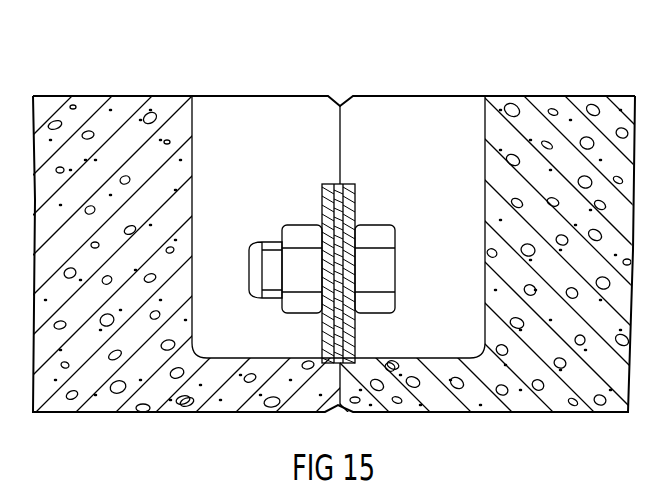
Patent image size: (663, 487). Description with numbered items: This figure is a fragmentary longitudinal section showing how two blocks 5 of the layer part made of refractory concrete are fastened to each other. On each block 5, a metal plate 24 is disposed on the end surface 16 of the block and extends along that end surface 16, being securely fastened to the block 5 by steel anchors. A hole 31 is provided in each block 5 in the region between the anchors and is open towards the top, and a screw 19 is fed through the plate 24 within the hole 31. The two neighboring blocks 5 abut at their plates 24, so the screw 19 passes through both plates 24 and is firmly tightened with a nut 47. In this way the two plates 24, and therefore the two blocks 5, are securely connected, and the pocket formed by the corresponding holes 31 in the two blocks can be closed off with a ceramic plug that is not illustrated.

The block 5 is at (117, 117).
The hole 31 is at (437, 103).
The end surface 16 is at (327, 393).
The metal plate 24 is at (350, 200).
The nut 47 is at (300, 237).
The screw 19 is at (385, 270).